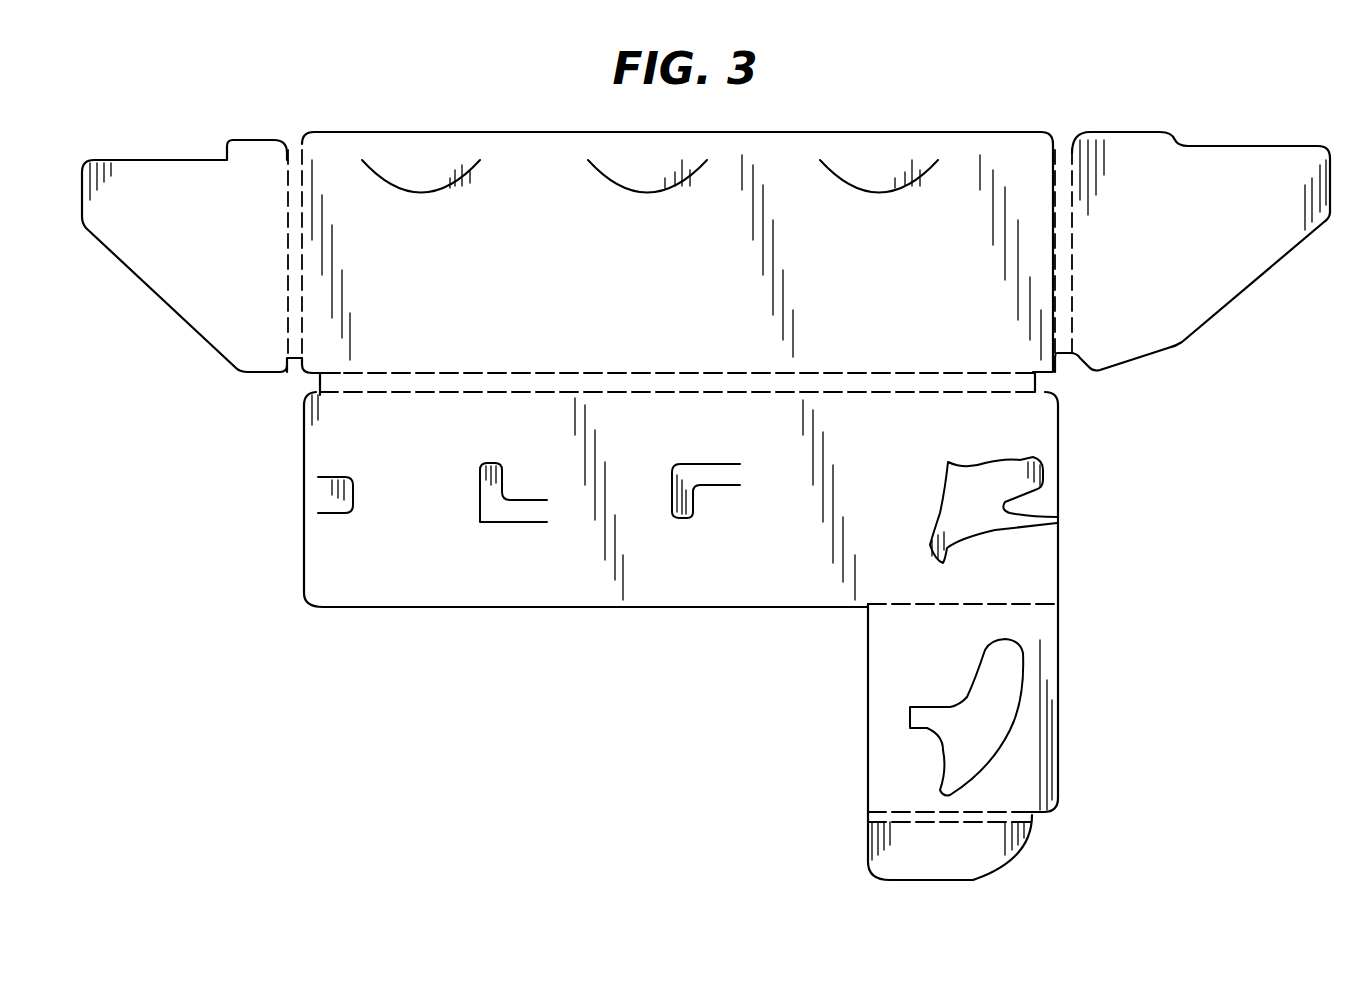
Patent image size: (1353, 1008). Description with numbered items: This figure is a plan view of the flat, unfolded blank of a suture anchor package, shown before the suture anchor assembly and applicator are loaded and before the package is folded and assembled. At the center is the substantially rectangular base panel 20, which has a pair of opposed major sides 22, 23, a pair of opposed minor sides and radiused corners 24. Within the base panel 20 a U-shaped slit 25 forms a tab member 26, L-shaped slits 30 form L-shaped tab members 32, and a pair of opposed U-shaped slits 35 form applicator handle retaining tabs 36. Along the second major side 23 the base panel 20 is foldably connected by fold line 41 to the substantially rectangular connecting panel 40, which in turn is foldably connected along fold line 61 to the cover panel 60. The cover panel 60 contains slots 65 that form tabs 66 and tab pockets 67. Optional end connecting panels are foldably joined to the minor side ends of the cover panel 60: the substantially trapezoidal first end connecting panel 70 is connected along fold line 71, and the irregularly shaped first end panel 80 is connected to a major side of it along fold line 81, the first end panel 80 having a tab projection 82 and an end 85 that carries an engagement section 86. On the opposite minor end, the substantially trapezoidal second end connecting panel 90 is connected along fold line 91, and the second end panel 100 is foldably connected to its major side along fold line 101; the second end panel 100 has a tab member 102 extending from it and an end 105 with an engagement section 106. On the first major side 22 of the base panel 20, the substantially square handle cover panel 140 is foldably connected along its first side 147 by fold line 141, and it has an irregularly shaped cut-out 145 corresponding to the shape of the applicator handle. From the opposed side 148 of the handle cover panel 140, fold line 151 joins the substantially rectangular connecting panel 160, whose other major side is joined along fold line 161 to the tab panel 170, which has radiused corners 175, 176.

The base panel 20 is at (408, 502).
The first major side 22 is at (570, 607).
The second major side 23 is at (440, 402).
The radiused corners 24 is at (303, 612).
The U-shaped slit 25 is at (327, 500).
The tab member 26 is at (322, 505).
The L-shaped slits 30 is at (485, 522).
The L-shaped tab members 32 is at (495, 512).
The U-shaped slits 35 is at (947, 478).
The applicator handle retaining tabs 36 is at (1057, 521).
The connecting panel 40 is at (480, 386).
The fold line 41 is at (1003, 396).
The cover panel 60 is at (783, 146).
The fold line 61 is at (312, 384).
The slots 65 is at (415, 193).
The tabs 66 is at (398, 178).
The tab pockets 67 is at (446, 158).
The first end connecting panel 70 is at (1060, 170).
The fold line 71 is at (1053, 203).
The first end panel 80 is at (1222, 208).
The fold line 81 is at (1068, 188).
The tab projection 82 is at (1130, 140).
The end 85 is at (1310, 190).
The engagement section 86 is at (1290, 152).
The second end connecting panel 90 is at (288, 327).
The fold line 91 is at (303, 180).
The second end panel 100 is at (185, 240).
The fold line 101 is at (287, 177).
The tab member 102 is at (247, 140).
The end 105 is at (82, 203).
The engagement section 106 is at (146, 162).
The handle cover panel 140 is at (1027, 708).
The fold line 141 is at (1032, 603).
The irregularly shaped cut-out 145 is at (993, 688).
The first side 147 is at (893, 608).
The opposed side 148 is at (868, 817).
The fold line 151 is at (1010, 813).
The connecting panel 160 is at (920, 817).
The fold line 161 is at (1030, 833).
The tab panel 170 is at (940, 863).
The radiused corner 175 is at (873, 870).
The radiused corner 176 is at (1023, 853).